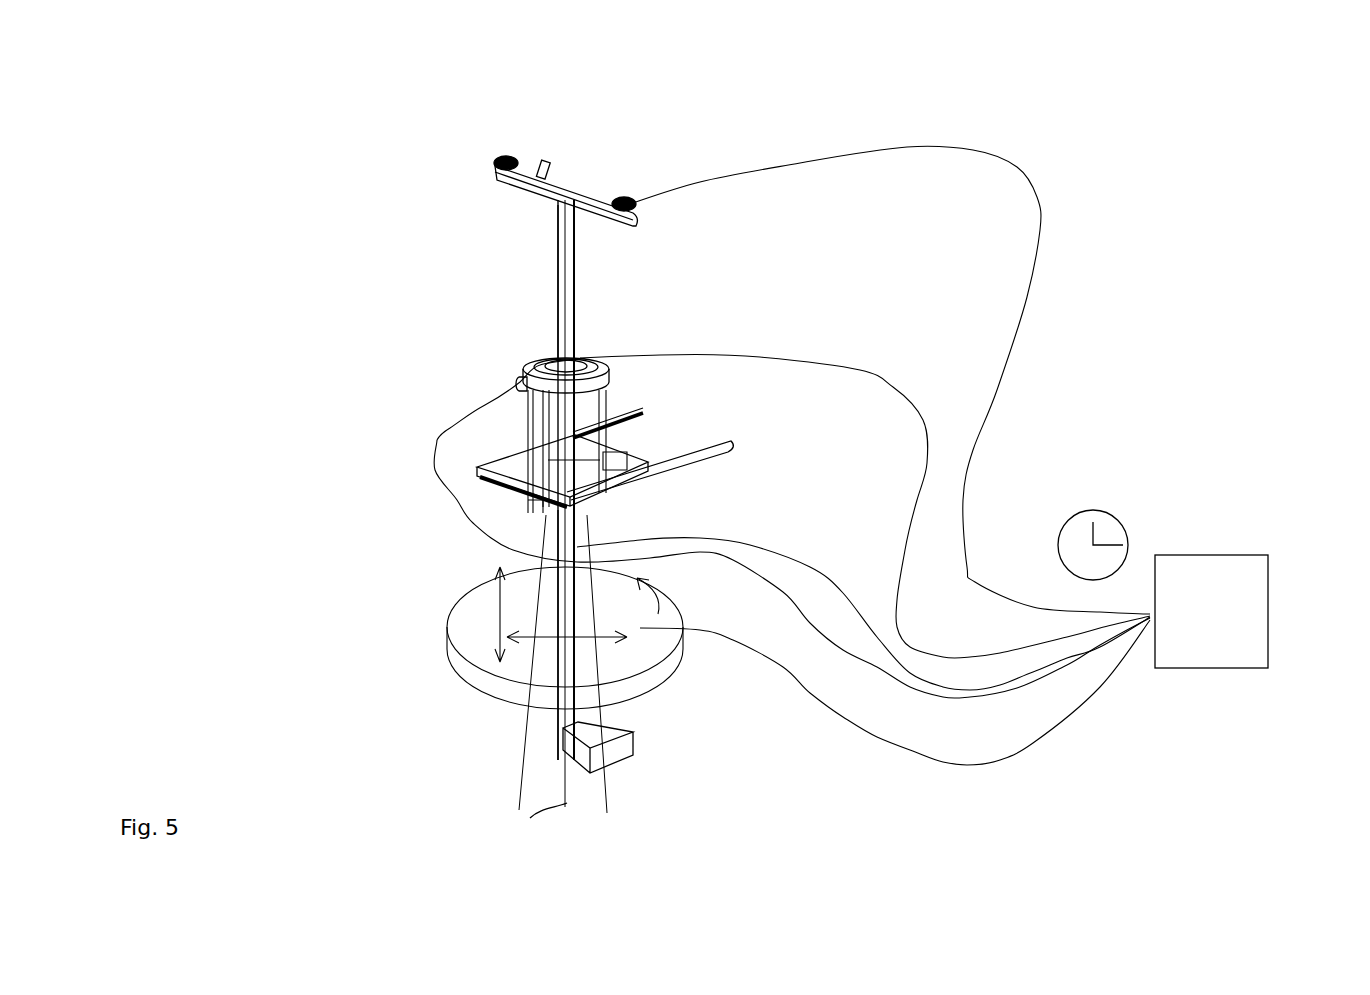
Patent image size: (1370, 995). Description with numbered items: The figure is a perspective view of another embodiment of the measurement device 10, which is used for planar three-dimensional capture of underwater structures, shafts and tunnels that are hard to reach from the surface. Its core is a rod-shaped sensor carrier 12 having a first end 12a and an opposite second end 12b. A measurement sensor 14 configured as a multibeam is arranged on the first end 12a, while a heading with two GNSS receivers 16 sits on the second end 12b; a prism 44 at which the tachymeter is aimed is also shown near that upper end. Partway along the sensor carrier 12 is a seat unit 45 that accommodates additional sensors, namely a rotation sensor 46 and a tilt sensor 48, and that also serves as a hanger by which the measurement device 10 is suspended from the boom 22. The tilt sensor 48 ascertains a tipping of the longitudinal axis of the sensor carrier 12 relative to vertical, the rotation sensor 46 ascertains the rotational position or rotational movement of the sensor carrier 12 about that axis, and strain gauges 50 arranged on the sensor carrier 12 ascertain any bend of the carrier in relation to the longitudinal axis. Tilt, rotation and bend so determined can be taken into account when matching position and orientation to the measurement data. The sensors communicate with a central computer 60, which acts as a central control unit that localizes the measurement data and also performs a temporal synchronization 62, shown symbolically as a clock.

The measurement device 10 is at (812, 292).
The sensor carrier 12 is at (573, 323).
The first end 12a is at (570, 710).
The second end 12b is at (573, 253).
The measurement sensor 14 is at (613, 765).
The GNSS receivers 16 is at (513, 157).
The boom 22 is at (680, 457).
The prism 44 is at (537, 167).
The seat unit 45 is at (512, 363).
The rotation sensor 46 is at (522, 384).
The tilt sensor 48 is at (573, 357).
The strain gauges 50 is at (603, 637).
The central computer 60 is at (1228, 553).
The temporal synchronization 62 is at (1120, 520).